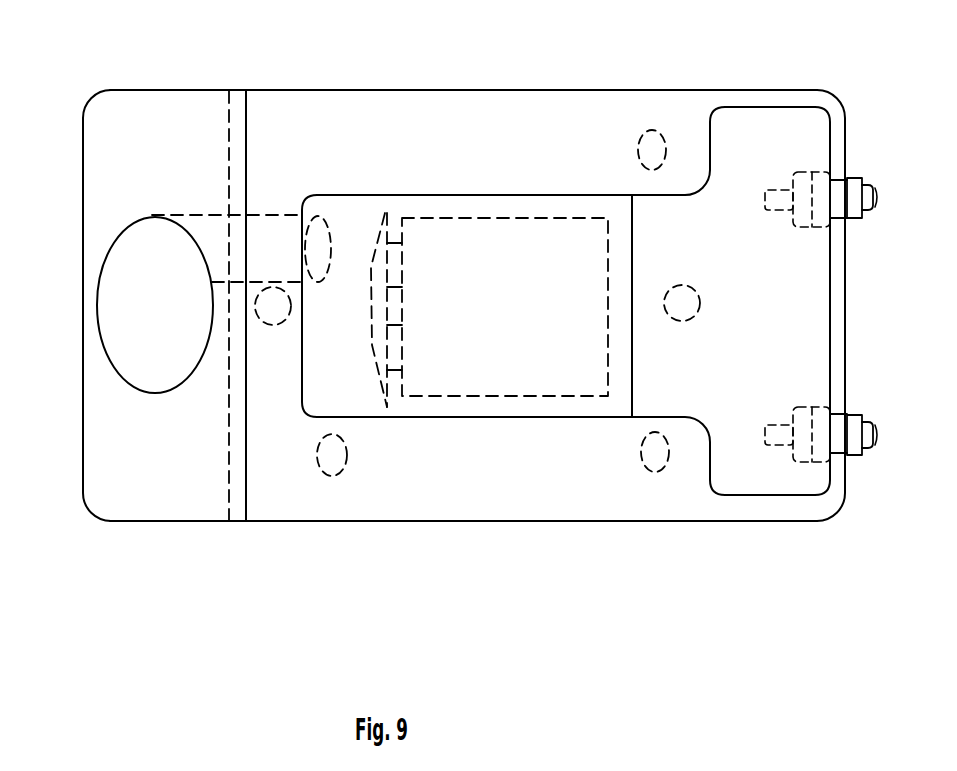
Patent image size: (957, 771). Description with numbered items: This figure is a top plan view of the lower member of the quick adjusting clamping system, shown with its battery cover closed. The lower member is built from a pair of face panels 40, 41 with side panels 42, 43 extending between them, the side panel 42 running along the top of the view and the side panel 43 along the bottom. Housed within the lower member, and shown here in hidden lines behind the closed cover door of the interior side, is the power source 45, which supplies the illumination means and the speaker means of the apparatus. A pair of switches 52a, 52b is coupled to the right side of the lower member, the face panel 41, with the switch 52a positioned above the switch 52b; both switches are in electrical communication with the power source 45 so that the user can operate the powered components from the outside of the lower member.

The face panel 40 is at (82, 335).
The face panel 41 is at (848, 313).
The side panel 42 is at (472, 90).
The side panel 43 is at (457, 521).
The power source 45 is at (512, 396).
The switch 52a is at (852, 202).
The switch 52b is at (857, 437).